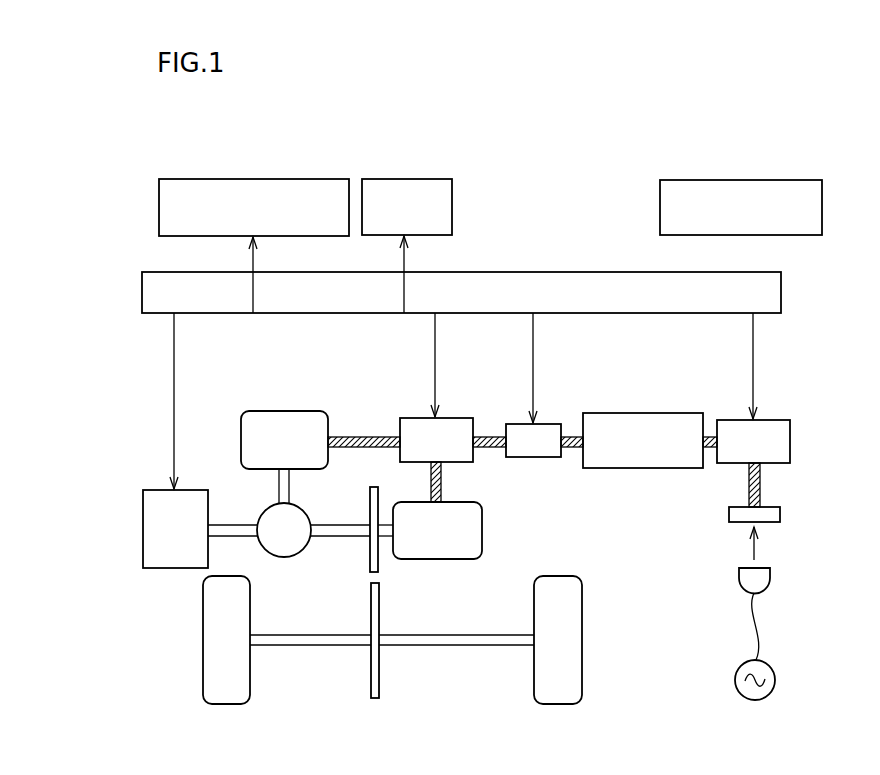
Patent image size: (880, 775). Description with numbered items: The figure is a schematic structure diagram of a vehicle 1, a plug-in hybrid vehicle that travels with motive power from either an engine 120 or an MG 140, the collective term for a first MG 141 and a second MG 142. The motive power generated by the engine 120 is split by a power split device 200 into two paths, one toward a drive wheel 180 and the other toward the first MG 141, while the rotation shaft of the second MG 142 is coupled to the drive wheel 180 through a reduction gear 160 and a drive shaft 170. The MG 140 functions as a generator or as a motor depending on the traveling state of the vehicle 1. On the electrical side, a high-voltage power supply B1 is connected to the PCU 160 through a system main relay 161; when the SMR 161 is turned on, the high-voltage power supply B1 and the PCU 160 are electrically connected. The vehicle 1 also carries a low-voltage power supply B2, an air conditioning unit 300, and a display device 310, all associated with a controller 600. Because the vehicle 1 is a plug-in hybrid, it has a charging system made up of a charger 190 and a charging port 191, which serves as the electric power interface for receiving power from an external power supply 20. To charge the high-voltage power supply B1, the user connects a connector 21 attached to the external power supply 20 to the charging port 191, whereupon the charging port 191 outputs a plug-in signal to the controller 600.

The vehicle 1 is at (481, 97).
The air conditioning unit 300 is at (250, 177).
The display device 310 is at (403, 177).
The low-voltage power supply B2 is at (733, 178).
The controller 600 is at (626, 270).
The engine 120 is at (158, 570).
The motor generator (MG) 140 is at (411, 463).
The first motor generator 141 is at (282, 410).
The second motor generator 142 is at (482, 530).
The power split device 200 is at (287, 560).
The power control unit (PCU) / reduction gear 160 is at (462, 417).
The system main relay (SMR) 161 is at (553, 423).
The high-voltage power supply B1 is at (664, 412).
The charger 190 is at (778, 419).
The charging port 191 is at (773, 505).
The connector 21 is at (771, 575).
The external power supply 20 is at (776, 681).
The drive shaft 170 is at (307, 647).
The drive wheel 180 is at (228, 706).